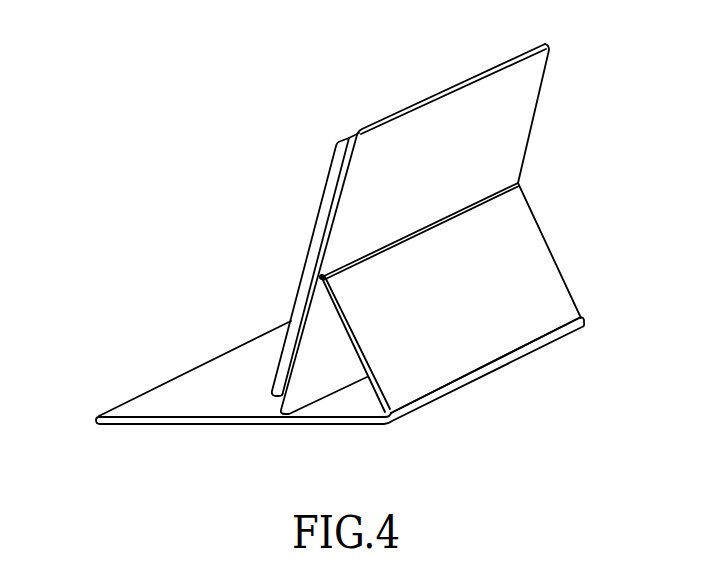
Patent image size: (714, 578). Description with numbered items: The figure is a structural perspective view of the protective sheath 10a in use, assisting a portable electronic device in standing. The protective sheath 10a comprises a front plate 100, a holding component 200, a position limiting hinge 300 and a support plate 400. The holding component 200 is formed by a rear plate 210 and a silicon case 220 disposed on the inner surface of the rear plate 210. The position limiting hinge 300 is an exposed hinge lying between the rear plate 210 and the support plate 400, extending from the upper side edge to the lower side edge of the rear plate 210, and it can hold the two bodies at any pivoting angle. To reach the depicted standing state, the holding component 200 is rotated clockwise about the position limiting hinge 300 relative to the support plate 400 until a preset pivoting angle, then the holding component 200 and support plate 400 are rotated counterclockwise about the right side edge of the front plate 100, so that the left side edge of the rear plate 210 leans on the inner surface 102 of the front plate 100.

The protective sheath 10a is at (342, 244).
The front plate 100 is at (130, 428).
The inner surface of the front plate 102 is at (157, 404).
The holding component 200 is at (410, 218).
The rear plate 210 is at (408, 148).
The silicon case 220 is at (319, 232).
The position limiting hinge 300 is at (319, 277).
The support plate 400 is at (525, 260).